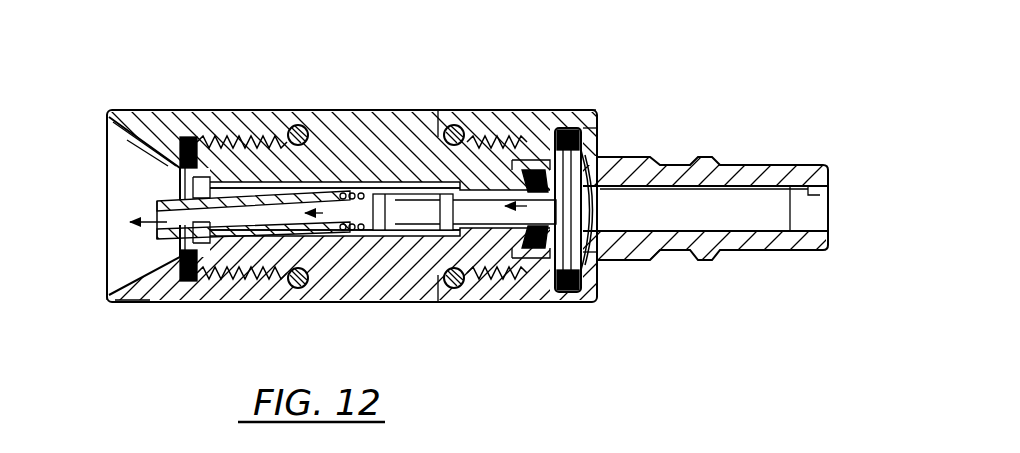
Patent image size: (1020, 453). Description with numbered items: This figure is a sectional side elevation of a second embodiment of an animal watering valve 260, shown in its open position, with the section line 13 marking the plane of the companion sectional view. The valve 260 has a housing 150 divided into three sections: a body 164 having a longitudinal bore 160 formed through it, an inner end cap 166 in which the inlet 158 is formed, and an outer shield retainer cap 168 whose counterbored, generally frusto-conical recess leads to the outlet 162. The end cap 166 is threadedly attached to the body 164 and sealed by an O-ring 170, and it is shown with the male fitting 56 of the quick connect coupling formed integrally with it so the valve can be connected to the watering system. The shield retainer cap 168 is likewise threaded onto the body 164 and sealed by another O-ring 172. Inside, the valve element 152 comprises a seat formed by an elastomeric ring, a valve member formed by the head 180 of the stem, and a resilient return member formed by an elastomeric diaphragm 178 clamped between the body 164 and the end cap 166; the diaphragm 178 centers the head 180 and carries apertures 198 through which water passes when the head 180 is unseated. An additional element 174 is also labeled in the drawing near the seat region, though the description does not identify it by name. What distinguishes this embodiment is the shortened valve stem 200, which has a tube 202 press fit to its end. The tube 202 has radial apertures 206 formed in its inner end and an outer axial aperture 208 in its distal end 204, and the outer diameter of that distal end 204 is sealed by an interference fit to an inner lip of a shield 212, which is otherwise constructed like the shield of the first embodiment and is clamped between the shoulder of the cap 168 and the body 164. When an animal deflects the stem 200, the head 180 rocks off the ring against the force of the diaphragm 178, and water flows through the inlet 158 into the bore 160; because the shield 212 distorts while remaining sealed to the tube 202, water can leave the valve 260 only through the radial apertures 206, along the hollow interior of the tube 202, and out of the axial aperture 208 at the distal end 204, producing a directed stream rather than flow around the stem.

The section line 13- 13 is at (180, 57).
The male fitting 56 is at (803, 163).
The housing 150 is at (345, 106).
The valve element 152 is at (530, 265).
The inlet 158 is at (812, 193).
The longitudinal bore 160 is at (243, 180).
The outlet 162 is at (107, 286).
The body 164 is at (430, 110).
The end cap 166 is at (600, 110).
The shield retainer cap 168 is at (133, 302).
The O-ring 170 is at (455, 290).
The O-ring 172 is at (300, 126).
The seal 174 is at (533, 135).
The elastomeric diaphragm 178 is at (593, 143).
The head 180 is at (593, 157).
The apertures 198 is at (600, 258).
The shortened valve stem 200 is at (483, 232).
The tube 202 is at (278, 240).
The distal end 204 is at (157, 200).
The radial apertures 206 is at (367, 193).
The outer axial aperture 208 is at (158, 212).
The shield 212 is at (167, 247).
The valve 260 is at (499, 79).